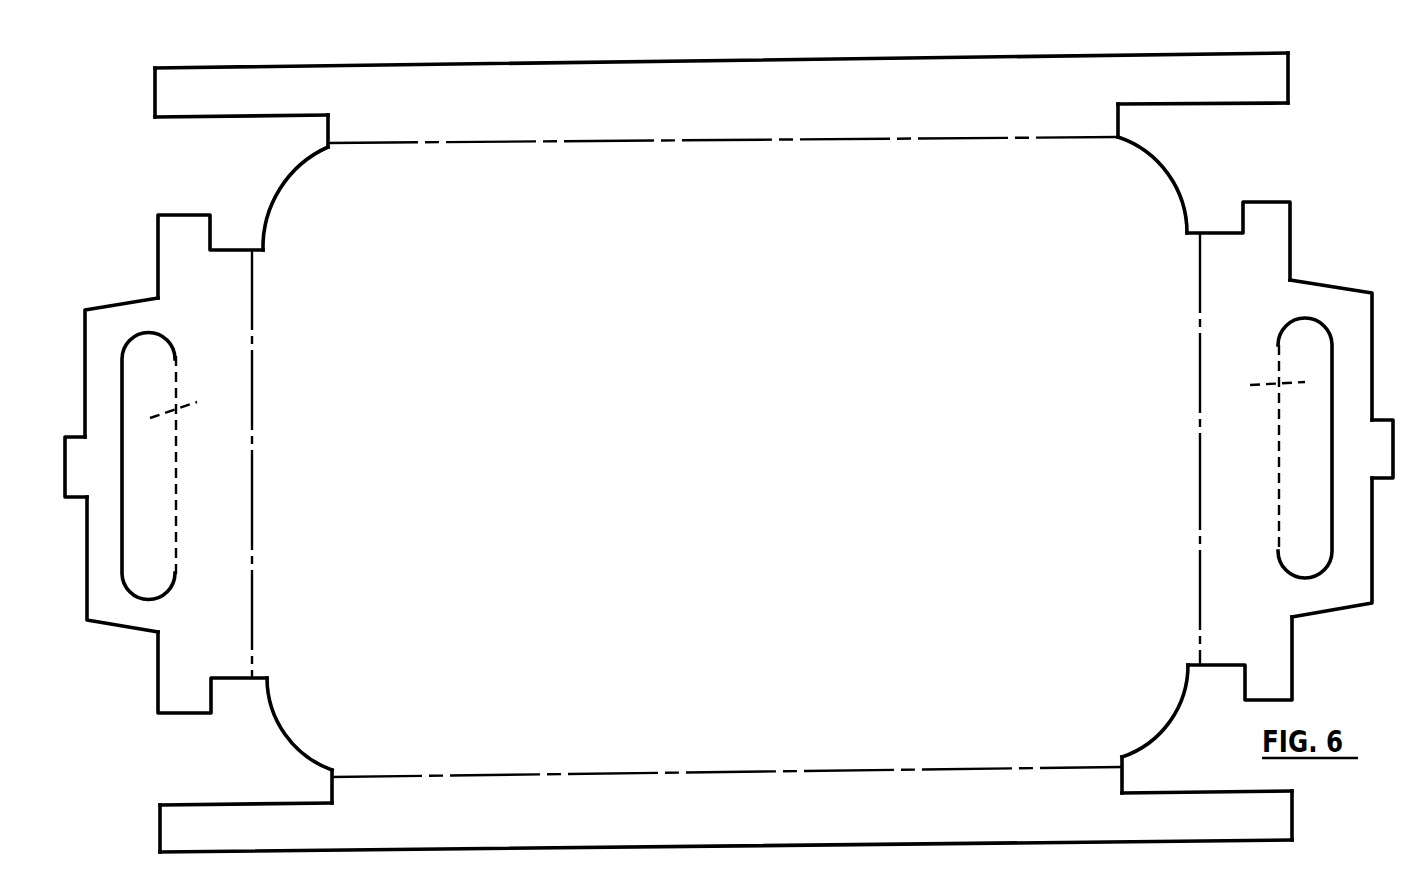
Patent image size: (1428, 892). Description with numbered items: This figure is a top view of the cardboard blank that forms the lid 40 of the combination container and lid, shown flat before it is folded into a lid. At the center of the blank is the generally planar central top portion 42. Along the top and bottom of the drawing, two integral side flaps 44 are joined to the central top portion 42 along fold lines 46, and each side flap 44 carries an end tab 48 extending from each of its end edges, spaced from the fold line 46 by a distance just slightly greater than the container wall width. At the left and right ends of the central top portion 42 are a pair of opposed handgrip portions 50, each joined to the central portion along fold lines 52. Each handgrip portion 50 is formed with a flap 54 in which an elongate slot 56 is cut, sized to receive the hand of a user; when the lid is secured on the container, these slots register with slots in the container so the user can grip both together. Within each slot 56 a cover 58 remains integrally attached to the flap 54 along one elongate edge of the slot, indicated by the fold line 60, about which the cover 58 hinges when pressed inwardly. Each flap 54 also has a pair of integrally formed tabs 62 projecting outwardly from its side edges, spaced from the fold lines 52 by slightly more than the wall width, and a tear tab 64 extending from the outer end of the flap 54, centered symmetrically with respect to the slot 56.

The lid 40 is at (636, 46).
The central top portion 42 is at (710, 479).
The side flap 44 is at (877, 105).
The fold line 46 is at (675, 140).
The end tab 48 is at (234, 82).
The handgrip portion 50 is at (128, 298).
The fold line 52 is at (254, 533).
The flap 54 is at (228, 331).
The elongate slot 56 is at (727, 397).
The cover 58 is at (160, 552).
The fold line 60 is at (183, 475).
The tab 62 is at (187, 222).
The tear tab 64 is at (76, 450).